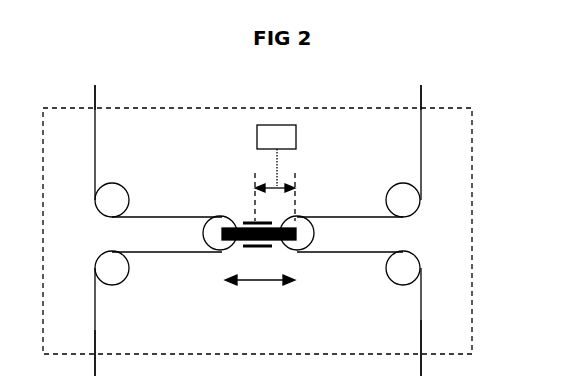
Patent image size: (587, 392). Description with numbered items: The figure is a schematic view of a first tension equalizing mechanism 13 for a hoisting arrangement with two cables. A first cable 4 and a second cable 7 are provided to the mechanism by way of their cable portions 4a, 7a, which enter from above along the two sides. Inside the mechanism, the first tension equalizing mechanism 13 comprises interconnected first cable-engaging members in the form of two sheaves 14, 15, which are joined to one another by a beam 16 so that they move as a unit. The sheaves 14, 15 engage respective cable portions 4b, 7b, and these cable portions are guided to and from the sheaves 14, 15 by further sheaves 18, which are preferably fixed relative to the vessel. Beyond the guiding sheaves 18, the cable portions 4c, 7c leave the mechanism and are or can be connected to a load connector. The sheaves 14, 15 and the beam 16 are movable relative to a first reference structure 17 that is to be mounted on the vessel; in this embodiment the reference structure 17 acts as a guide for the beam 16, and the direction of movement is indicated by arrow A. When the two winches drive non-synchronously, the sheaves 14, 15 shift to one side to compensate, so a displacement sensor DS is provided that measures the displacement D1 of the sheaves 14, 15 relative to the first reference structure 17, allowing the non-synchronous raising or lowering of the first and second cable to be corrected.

The first cable 4 is at (95, 153).
The cable portion of the first cable 4a is at (95, 103).
The cable portion of the first cable 4b is at (153, 216).
The cable portion of the first cable 4c is at (95, 343).
The second cable 7 is at (421, 158).
The cable portion of the second cable 7a is at (421, 96).
The cable portion of the second cable 7b is at (342, 252).
The cable portion of the second cable 7c is at (421, 337).
The first tension equalizing mechanism 13 is at (472, 170).
The sheave 14 is at (215, 228).
The sheave 15 is at (300, 228).
The beam 16 is at (240, 247).
The first reference structure 17 is at (250, 221).
The sheaves 18 is at (118, 192).
The displacement sensor DS is at (258, 131).
The displacement D1 is at (278, 186).
The arrow A is at (260, 280).